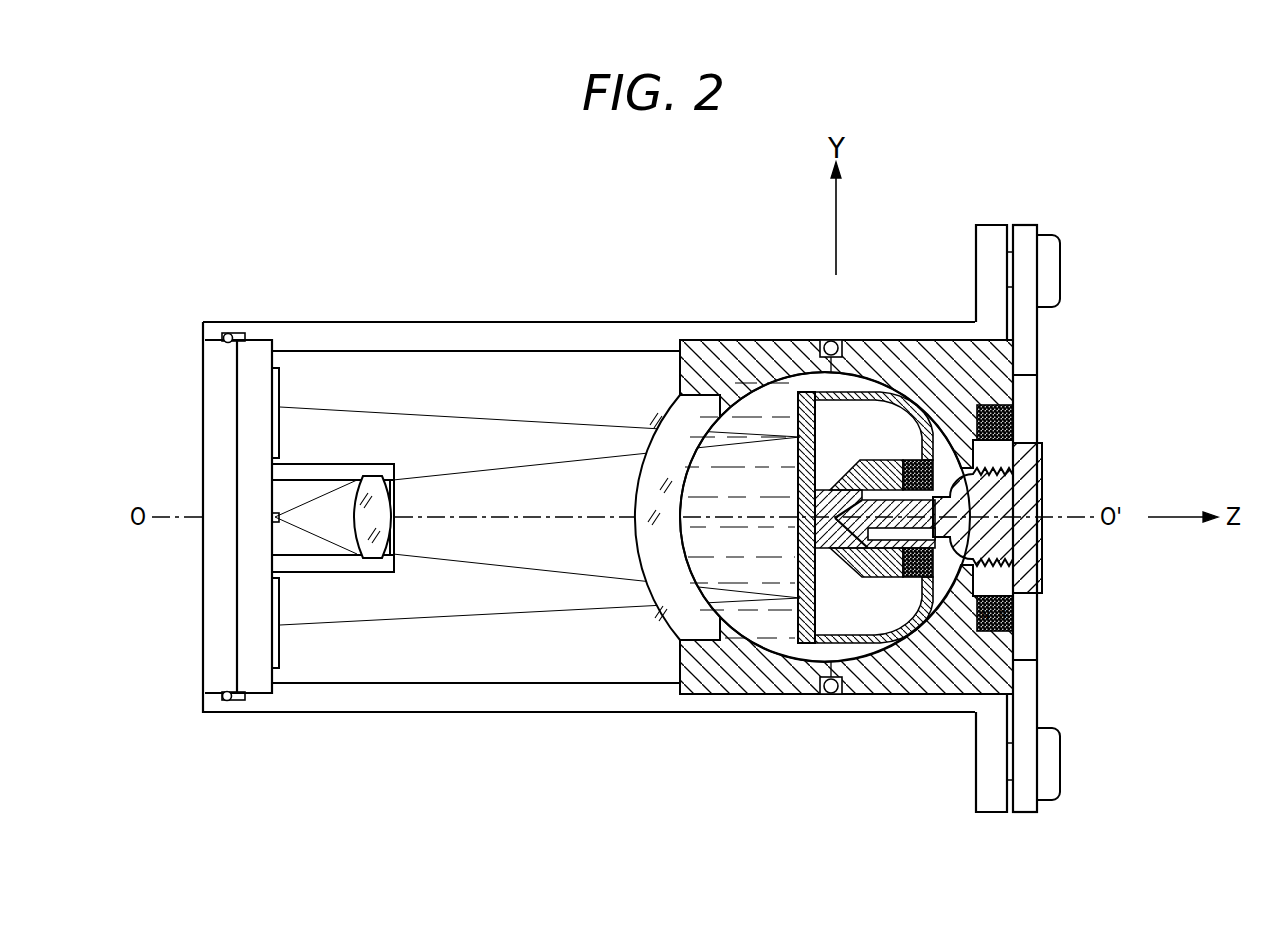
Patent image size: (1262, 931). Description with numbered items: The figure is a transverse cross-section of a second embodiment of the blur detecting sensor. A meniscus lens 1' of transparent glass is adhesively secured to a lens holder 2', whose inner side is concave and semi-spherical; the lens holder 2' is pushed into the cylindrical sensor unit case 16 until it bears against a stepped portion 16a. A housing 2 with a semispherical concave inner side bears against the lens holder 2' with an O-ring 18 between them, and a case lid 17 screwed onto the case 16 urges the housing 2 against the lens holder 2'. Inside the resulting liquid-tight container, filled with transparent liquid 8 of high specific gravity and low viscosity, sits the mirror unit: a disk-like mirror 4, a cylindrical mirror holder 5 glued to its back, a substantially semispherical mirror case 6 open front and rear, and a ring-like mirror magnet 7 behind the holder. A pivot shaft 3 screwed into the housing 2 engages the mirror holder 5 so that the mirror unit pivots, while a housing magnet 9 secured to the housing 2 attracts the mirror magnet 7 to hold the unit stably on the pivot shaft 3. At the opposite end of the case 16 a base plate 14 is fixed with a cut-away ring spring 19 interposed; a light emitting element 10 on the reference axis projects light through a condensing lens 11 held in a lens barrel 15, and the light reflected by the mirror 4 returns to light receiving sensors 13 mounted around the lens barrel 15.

The meniscus lens 1' is at (673, 579).
The housing 2 is at (846, 664).
The lens holder 2' is at (706, 690).
The pivot shaft 3 is at (1025, 477).
The mirror 4 is at (800, 392).
The mirror holder 5 is at (882, 455).
The mirror case 6 is at (927, 432).
The mirror magnet 7 is at (913, 580).
The transparent liquid 8 is at (947, 592).
The housing magnet 9 is at (1013, 412).
The light emitting element 10 is at (270, 517).
The condensing lens 11 is at (371, 557).
The light receiving sensor 13 is at (277, 660).
The base plate 14 is at (248, 615).
The lens barrel 15 is at (340, 472).
The sensor unit case 16 is at (476, 700).
The stepped portion 16a is at (680, 341).
The case lid 17 is at (1027, 690).
The O-ring 18 is at (828, 694).
The cut-away ring spring 19 is at (222, 700).